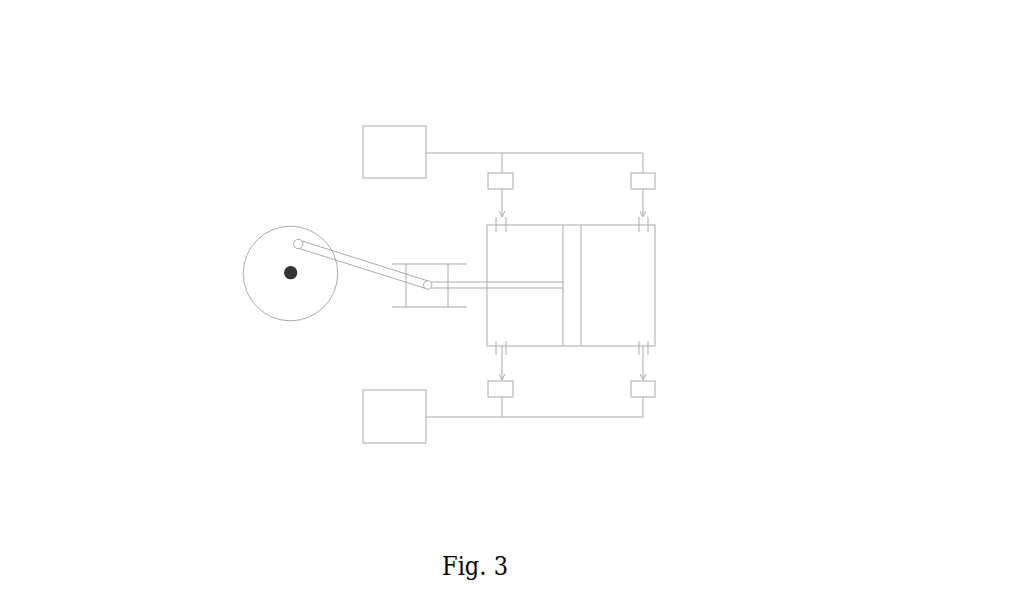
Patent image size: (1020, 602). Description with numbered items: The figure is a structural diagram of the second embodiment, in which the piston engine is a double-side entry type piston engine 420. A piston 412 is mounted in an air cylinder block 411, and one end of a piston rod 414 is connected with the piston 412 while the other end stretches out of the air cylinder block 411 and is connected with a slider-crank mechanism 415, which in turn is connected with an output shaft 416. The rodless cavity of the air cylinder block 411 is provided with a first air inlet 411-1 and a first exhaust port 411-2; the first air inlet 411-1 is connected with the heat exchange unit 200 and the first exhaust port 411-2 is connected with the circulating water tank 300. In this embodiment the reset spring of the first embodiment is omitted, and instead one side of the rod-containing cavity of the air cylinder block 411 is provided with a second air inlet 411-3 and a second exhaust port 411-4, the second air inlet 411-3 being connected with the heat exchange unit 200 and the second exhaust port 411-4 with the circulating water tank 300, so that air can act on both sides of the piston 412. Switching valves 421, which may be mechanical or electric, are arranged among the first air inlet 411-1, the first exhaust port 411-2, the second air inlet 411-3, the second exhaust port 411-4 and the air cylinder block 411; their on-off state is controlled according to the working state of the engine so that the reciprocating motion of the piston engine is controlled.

The heat exchange unit 200 is at (342, 122).
The circulating water tank 300 is at (382, 420).
The air cylinder block 411 is at (610, 312).
The first air inlet 411-1 is at (650, 220).
The first exhaust port 411-2 is at (650, 344).
The second air inlet 411-3 is at (506, 221).
The second exhaust port 411-4 is at (503, 350).
The piston 412 is at (568, 330).
The piston rod 414 is at (478, 284).
The slider-crank mechanism 415 is at (365, 268).
The output shaft 416 is at (287, 279).
The double-side entry type piston engine 420 is at (520, 126).
The switching valves 421 is at (643, 386).